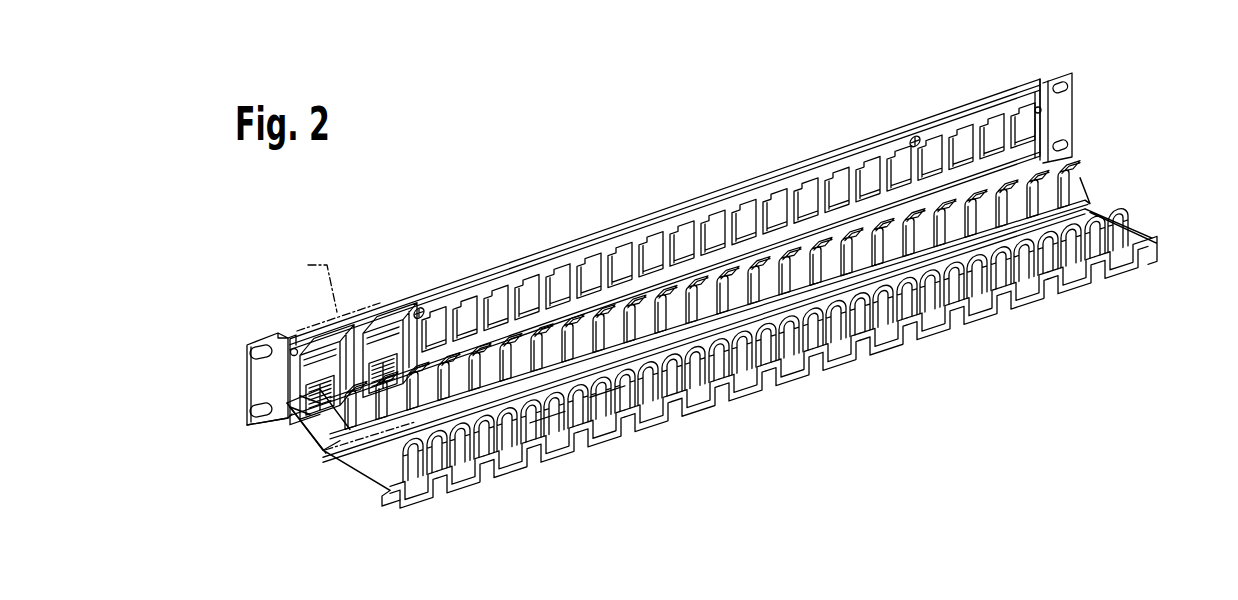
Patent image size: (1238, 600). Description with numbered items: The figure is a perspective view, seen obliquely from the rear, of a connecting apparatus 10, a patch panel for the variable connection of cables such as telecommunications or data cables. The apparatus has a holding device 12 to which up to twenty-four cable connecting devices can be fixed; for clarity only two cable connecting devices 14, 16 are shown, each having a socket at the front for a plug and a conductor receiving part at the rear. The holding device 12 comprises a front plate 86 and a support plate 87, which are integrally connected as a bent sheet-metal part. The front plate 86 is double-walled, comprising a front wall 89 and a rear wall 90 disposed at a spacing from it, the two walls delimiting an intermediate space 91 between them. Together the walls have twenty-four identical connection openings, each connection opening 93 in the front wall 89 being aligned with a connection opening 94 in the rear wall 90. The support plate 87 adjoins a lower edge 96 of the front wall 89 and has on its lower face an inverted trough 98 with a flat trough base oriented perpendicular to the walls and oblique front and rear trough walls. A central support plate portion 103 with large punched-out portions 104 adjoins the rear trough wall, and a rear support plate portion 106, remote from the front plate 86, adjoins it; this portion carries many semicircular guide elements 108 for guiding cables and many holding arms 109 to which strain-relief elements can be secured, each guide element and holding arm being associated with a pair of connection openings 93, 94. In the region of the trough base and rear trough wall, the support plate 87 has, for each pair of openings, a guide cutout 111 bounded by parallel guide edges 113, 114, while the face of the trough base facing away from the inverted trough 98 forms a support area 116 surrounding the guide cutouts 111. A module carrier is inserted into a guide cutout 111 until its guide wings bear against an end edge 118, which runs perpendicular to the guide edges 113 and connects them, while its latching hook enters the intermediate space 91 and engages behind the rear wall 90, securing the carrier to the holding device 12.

The connecting apparatus 10 is at (712, 157).
The holding device 12 is at (288, 432).
The cable connecting device 14 is at (392, 350).
The cable connecting device 16 is at (300, 386).
The front plate 86 is at (276, 333).
The support plate 87 is at (1100, 196).
The front wall 89 is at (1068, 102).
The rear wall 90 is at (1042, 136).
The intermediate space 91 is at (278, 360).
The connection opening 93 is at (893, 166).
The connection opening 94 is at (1000, 128).
The lower edge 96 is at (285, 414).
The inverted trough 98 is at (330, 448).
The central support plate portion 103 is at (342, 478).
The punched-out portions 104 is at (1045, 245).
The rear support plate portion 106 is at (398, 505).
The guide elements 108 is at (802, 374).
The holding arms 109 is at (1150, 253).
The guide cutout 111 is at (605, 392).
The guide edge 113 is at (455, 355).
The guide edge 114 is at (500, 355).
The support area 116 is at (545, 418).
The end edge 118 is at (600, 305).